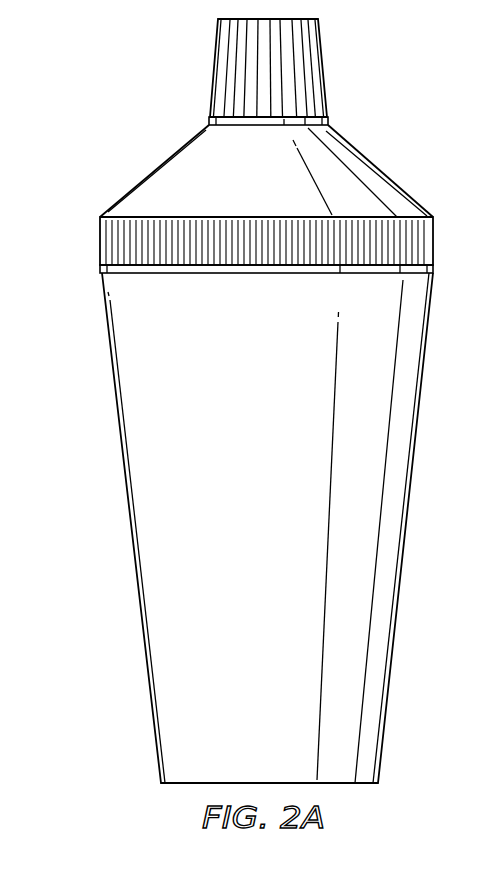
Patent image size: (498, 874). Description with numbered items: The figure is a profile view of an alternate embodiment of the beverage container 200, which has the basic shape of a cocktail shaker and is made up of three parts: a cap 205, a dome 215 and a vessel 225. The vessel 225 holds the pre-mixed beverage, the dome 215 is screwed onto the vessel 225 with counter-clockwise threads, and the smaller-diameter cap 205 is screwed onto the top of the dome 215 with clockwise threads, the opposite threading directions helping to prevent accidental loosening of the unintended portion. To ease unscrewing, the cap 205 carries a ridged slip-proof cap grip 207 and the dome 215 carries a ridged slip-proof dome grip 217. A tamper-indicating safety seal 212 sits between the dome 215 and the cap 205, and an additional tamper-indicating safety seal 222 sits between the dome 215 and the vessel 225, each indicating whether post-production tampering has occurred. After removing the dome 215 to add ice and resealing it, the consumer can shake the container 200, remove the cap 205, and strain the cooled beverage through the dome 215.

The beverage container 200 is at (438, 92).
The cap 205 is at (212, 63).
The ridged slip-proof cap grip 207 is at (297, 67).
The tamper-indicating safety seal 212 is at (210, 122).
The dome 215 is at (162, 162).
The ridged slip-proof dome grip 217 is at (412, 243).
The tamper-indicating safety seal 222 is at (100, 270).
The vessel 225 is at (129, 528).